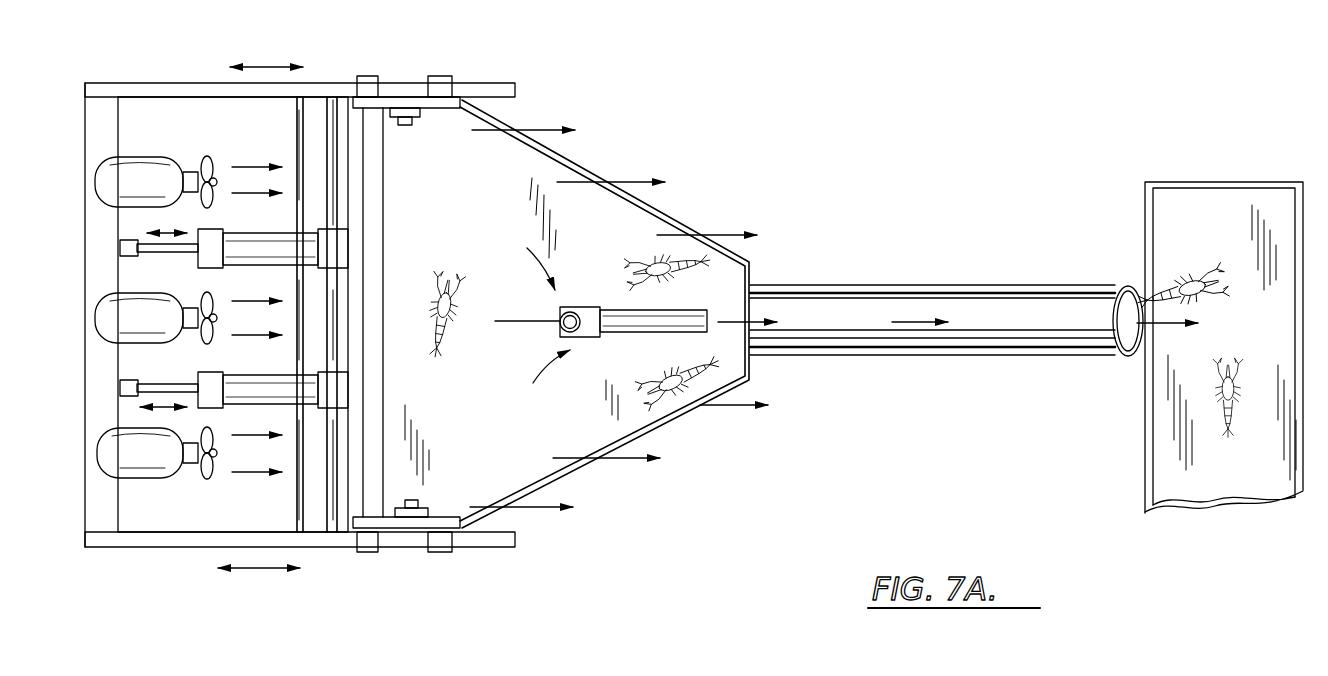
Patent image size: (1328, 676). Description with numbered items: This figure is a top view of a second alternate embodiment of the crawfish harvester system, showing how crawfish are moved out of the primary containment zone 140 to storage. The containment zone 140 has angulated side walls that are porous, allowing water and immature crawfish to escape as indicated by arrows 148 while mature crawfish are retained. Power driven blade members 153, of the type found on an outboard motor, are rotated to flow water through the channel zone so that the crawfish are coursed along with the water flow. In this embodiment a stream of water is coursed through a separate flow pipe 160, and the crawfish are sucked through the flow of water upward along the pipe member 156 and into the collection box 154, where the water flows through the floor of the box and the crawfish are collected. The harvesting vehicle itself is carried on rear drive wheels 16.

The rear drive wheels 16 is at (450, 330).
The primary containment zone 140 is at (500, 218).
The arrows indicating water flow 148 is at (622, 178).
The power driven blade member 153 is at (152, 176).
The collection box 154 is at (1242, 200).
The pipe member 156 is at (988, 300).
The separate flow pipe 160 is at (655, 323).